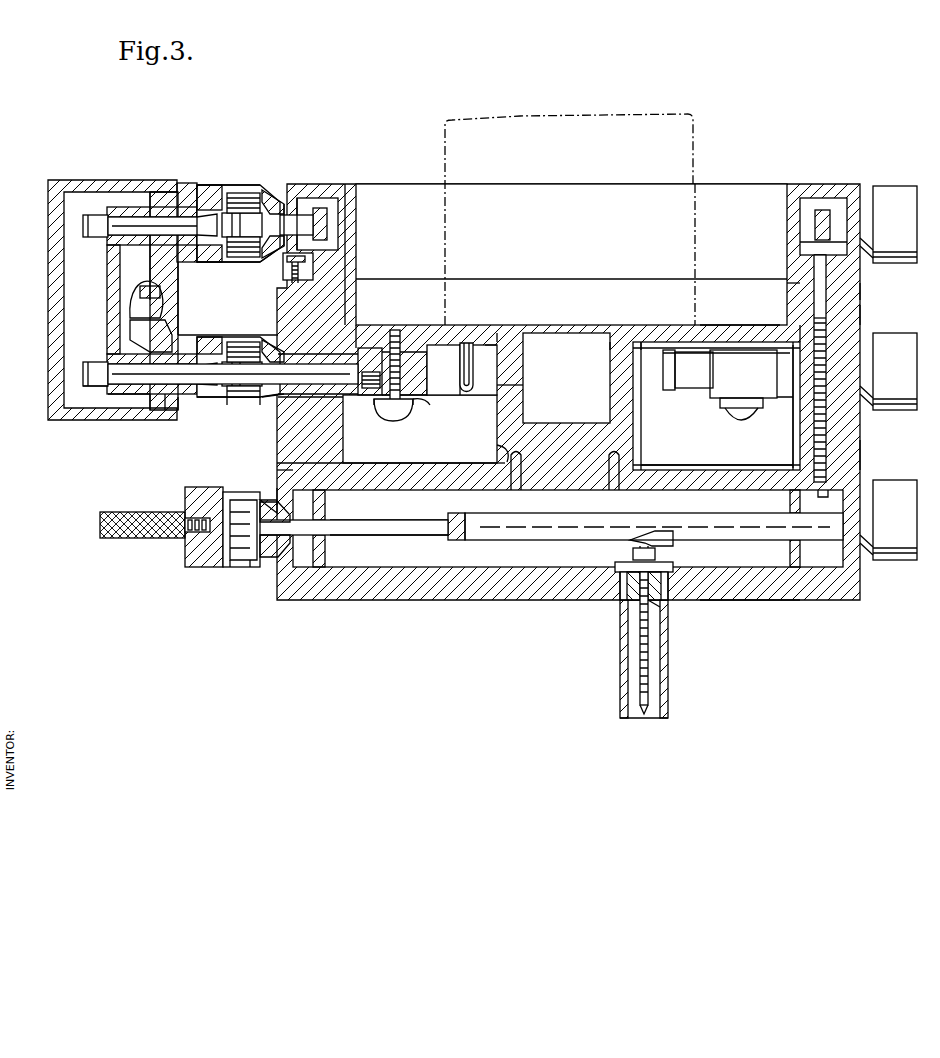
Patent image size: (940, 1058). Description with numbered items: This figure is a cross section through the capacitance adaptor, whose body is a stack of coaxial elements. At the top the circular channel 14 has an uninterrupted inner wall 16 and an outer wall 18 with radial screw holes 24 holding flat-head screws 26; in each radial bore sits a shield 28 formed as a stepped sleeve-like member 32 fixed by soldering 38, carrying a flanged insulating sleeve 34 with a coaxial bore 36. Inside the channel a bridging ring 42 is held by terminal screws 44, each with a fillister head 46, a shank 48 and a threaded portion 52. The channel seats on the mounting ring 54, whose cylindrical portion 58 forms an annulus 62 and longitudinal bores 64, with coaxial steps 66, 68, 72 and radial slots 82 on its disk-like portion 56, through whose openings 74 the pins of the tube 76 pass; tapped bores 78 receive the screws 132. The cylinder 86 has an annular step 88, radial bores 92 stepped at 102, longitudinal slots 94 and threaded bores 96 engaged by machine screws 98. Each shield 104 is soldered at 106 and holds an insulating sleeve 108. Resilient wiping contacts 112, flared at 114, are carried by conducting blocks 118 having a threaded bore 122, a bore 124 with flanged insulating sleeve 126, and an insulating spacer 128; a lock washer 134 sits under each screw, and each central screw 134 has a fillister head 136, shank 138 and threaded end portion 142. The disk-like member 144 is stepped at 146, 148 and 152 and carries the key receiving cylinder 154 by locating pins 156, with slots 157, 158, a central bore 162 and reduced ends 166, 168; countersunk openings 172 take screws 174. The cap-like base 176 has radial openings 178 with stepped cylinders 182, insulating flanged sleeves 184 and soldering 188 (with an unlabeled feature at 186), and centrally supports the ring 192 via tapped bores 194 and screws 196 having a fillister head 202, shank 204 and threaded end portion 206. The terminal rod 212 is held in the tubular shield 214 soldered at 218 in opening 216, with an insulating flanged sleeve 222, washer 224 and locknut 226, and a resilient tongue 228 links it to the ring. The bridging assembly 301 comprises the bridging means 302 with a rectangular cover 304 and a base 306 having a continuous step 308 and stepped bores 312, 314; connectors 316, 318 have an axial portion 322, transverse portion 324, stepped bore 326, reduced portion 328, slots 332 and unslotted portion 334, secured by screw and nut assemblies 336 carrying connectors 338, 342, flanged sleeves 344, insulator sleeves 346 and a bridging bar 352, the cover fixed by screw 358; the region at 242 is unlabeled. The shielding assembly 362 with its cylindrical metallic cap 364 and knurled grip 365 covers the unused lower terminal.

The circular channel 14 is at (810, 185).
The inner wall 16 is at (360, 190).
The outer wall 18 is at (863, 185).
The radial screw holes 24 is at (295, 278).
The flat-head screws 26 is at (278, 273).
The shield 28 is at (240, 183).
The stepped cylindrical sleeve-like member 32 is at (228, 182).
The flanged insulating sleeve 34 is at (255, 262).
The coaxial bore 36 is at (288, 207).
The soldering 38 is at (280, 182).
The bridging ring 42 is at (344, 186).
The terminal screws 44 is at (313, 213).
The fillister head 46 is at (225, 262).
The shank 48 is at (287, 225).
The threaded portion 52 is at (330, 225).
The mounting ring 54 is at (862, 318).
The disk-like portion 56 is at (738, 330).
The cylindrical portion 58 is at (863, 297).
The annulus 62 is at (840, 272).
The longitudinal bores 64 is at (824, 322).
The coaxial step 66 is at (318, 345).
The coaxial step 68 is at (441, 298).
The coaxial step 72 is at (530, 340).
The openings 74 is at (472, 343).
The tube 76 is at (697, 143).
The tapped bores 78 is at (396, 333).
The radial slots 82 is at (670, 343).
The cylinder 86 is at (857, 457).
The annular step 88 is at (340, 453).
The radial bores 92 is at (335, 398).
The longitudinal slots 94 is at (796, 428).
The threaded bores 96 is at (826, 425).
The machine screws 98 is at (815, 318).
The step 102 is at (278, 345).
The shield 104 is at (240, 403).
The soldering 106 is at (267, 413).
The insulating sleeve 108 is at (308, 412).
The resilient wiping contacts 112 is at (500, 390).
The flare 114 is at (487, 348).
The conducting blocks 118 is at (430, 396).
The threaded bore 122 is at (383, 410).
The bore 124 is at (412, 398).
The flanged insulating sleeve 126 is at (405, 413).
The insulating spacer 128 is at (432, 350).
The screw 132 is at (402, 350).
The screw 134 is at (743, 417).
The fillister head 136 is at (228, 400).
The shank 138 is at (233, 373).
The threaded end portion 142 is at (380, 395).
The disk-like member 144 is at (762, 493).
The central step 146 is at (505, 465).
The step 148 is at (353, 477).
The step 152 is at (327, 490).
The key receiving cylinder 154 is at (635, 420).
The locating pins 156 is at (513, 490).
The slot 157 is at (680, 465).
The slot 158 is at (637, 433).
The central bore 162 is at (608, 343).
The reduced end 166 is at (507, 343).
The reduced end 168 is at (505, 458).
The countersunk screw openings 172 is at (790, 495).
The screws 174 is at (820, 493).
The cap-like base 176 is at (763, 602).
The radial openings 178 is at (285, 557).
The stepped cylinder 182 is at (228, 565).
The insulating flanged sleeve 184 is at (250, 567).
The entry bore 186 is at (278, 505).
The soldering 188 is at (280, 500).
The ring 192 is at (458, 507).
The radial tapped bores 194 is at (465, 515).
The screws 196 is at (403, 522).
The fillister head 202 is at (230, 560).
The shank 204 is at (375, 535).
The threaded end portion 206 is at (452, 542).
The terminal rod 212 is at (640, 672).
The tubular shield 214 is at (667, 658).
The opening 216 is at (623, 580).
The soldering 218 is at (670, 577).
The insulating flanged sleeve 222 is at (655, 607).
The washer 224 is at (615, 567).
The locknut 226 is at (657, 560).
The resilient tongue 228 is at (668, 531).
The valve bottom 242 is at (205, 207).
The bridging assembly 301 is at (131, 158).
The bridging means 302 is at (80, 182).
The rectangular cover 304 is at (152, 415).
The base 306 is at (170, 427).
The continuous step 308 is at (165, 415).
The stepped bore 312 is at (170, 205).
The stepped bore 314 is at (158, 362).
The connector 316 is at (183, 182).
The connector 318 is at (185, 415).
The axial portion 322 is at (182, 182).
The transverse portion 324 is at (192, 252).
The stepped bore 326 is at (188, 247).
The reduced portion 328 is at (230, 335).
The slots 332 is at (245, 337).
The unslotted portion 334 is at (208, 337).
The screw and nut assemblies 336 is at (100, 362).
The connector 338 is at (213, 400).
The connector 342 is at (257, 403).
The flanged sleeves 344 is at (157, 398).
The insulator sleeves 346 is at (120, 397).
The bridging bar 352 is at (108, 282).
The screw 358 is at (138, 300).
The shielding assembly 362 is at (168, 566).
The cylindrical metallic cap 364 is at (185, 494).
The knurled grip 365 is at (95, 523).